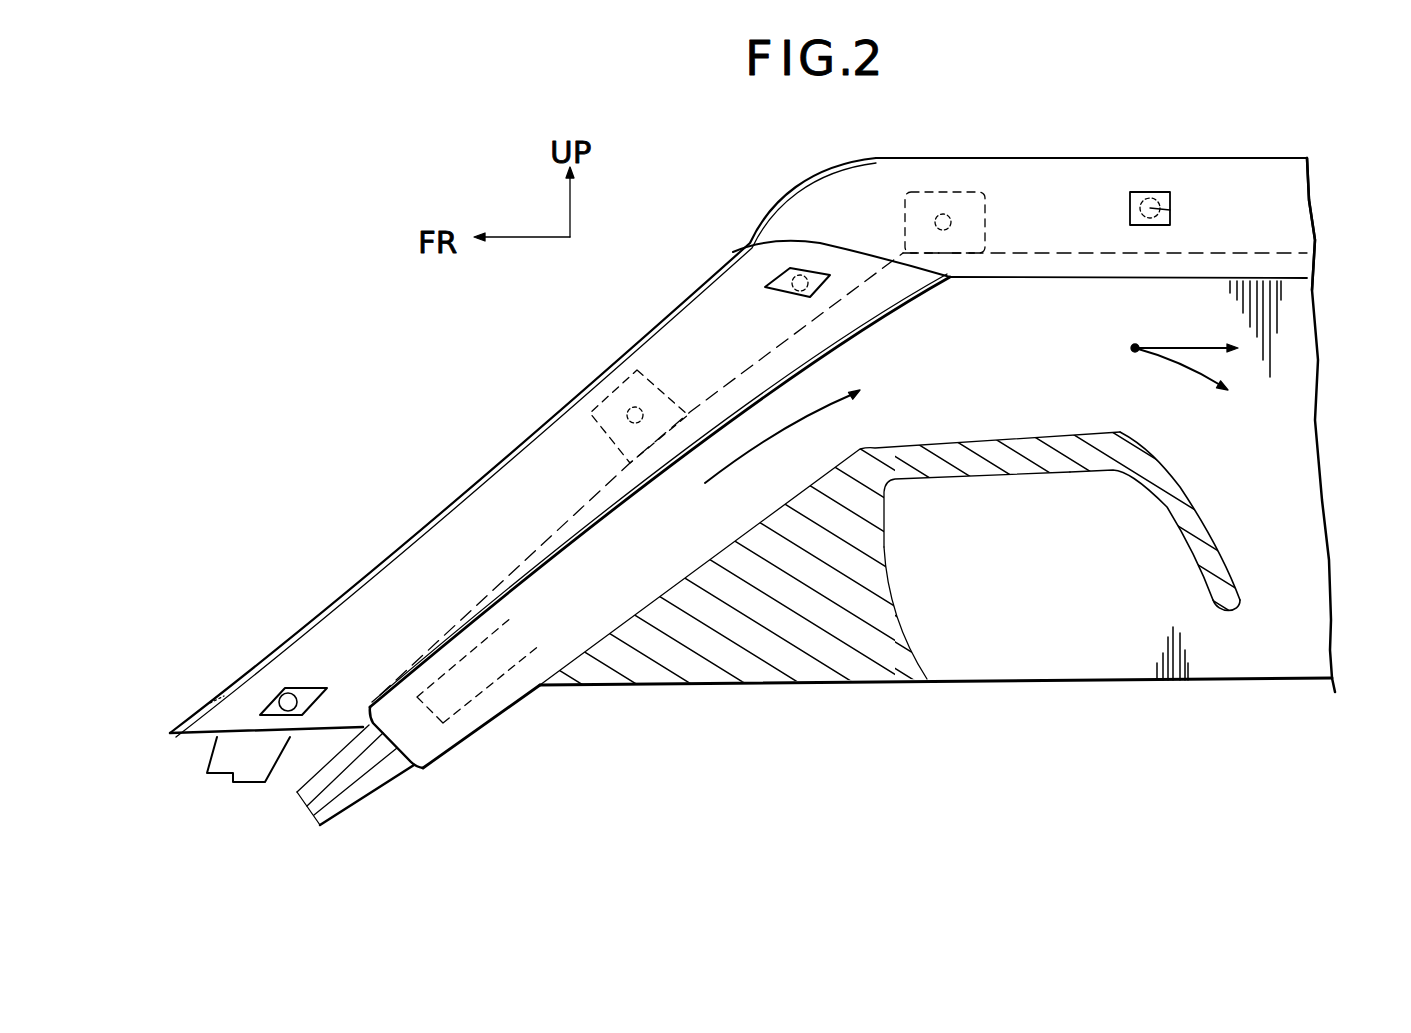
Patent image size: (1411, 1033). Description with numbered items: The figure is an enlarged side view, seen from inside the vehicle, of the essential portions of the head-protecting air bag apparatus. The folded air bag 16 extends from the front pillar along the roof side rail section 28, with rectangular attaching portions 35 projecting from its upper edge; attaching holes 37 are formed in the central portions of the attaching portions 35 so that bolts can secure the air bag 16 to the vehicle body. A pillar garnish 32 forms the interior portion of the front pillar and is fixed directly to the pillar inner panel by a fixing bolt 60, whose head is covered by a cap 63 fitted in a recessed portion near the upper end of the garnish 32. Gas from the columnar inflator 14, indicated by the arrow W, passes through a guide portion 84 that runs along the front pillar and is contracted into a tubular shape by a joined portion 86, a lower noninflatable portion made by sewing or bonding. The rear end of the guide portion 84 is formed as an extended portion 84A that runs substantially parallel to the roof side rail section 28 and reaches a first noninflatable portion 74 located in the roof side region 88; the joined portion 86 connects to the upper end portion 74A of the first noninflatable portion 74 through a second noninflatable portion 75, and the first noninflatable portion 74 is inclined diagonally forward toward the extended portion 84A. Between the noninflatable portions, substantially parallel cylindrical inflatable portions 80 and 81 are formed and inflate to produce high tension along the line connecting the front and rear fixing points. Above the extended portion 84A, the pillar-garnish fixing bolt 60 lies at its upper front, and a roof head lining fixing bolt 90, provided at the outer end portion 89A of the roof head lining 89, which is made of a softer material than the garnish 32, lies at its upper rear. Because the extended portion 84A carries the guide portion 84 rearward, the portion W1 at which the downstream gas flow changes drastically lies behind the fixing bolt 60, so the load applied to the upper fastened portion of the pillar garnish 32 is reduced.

The inflator 14 is at (373, 763).
The air bag 16 is at (1088, 693).
The roof side rail section 28 is at (1115, 152).
The pillar garnish 32 is at (583, 385).
The attaching portion 35 is at (903, 196).
The attaching hole 37 is at (940, 213).
The fixing bolt 60 is at (297, 695).
The cap 63 is at (316, 689).
The first noninflatable portion 74 is at (1182, 579).
The upper end portion 74A is at (1170, 478).
The second noninflatable portion 75 is at (1008, 463).
The inflatable portion 80 is at (985, 647).
The inflatable portion 81 is at (1257, 420).
The guide portion 84 is at (610, 568).
The extended portion 84A is at (1013, 320).
The joined portion 86 is at (838, 657).
The roof side region 88 is at (1084, 258).
The roof head lining 89 is at (1312, 205).
The outer end portion 89A is at (1283, 230).
The roof head lining fixing bolt 90 is at (1172, 208).
The gas W is at (763, 443).
The portion where gas flow changes W1 is at (1135, 348).